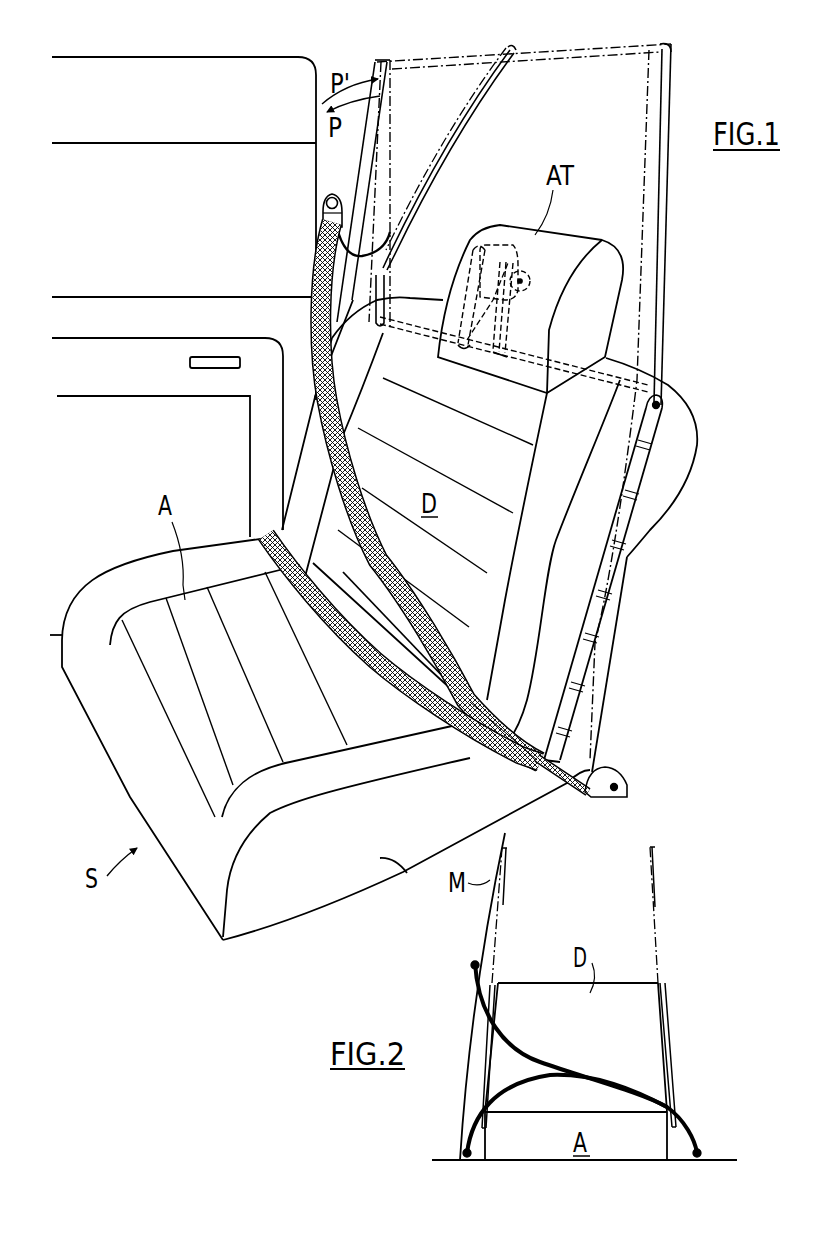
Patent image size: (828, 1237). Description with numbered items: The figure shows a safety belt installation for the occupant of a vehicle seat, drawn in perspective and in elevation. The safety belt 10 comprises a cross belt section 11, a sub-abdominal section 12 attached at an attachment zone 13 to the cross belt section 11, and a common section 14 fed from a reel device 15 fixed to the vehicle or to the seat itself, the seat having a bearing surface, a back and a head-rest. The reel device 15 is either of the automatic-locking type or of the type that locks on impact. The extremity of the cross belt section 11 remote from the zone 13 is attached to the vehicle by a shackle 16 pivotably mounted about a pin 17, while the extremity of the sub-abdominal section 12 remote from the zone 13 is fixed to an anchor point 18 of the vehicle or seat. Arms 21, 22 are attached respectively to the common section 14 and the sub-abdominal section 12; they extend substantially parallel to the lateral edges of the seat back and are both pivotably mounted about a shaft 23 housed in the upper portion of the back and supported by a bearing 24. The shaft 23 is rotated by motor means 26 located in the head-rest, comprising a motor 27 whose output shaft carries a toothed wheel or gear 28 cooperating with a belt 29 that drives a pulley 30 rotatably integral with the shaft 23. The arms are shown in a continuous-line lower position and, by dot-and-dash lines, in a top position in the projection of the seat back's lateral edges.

In FIG. 1, the safety belt 10 is at (440, 630).
In FIG. 1, the cross belt section 11 is at (342, 412).
In FIG. 2, the cross belt section 11 is at (528, 1048).
In FIG. 1, the sub-abdominal section 12 is at (363, 652).
In FIG. 2, the sub-abdominal section 12 is at (533, 1080).
In FIG. 1, the attachment zone 13 is at (480, 748).
In FIG. 1, the common section 14 is at (530, 752).
In FIG. 1, the reel device 15 is at (621, 778).
In FIG. 2, the reel device 15 is at (700, 1150).
In FIG. 1, the shackle 16 is at (321, 218).
In FIG. 1, the pin 17 is at (326, 203).
In FIG. 2, the pin 17 is at (472, 967).
In FIG. 2, the anchor point 18 is at (463, 1152).
In FIG. 1, the arm 21 is at (594, 617).
In FIG. 2, the arm 21 is at (670, 1027).
In FIG. 1, the arm 22 is at (388, 186).
In FIG. 2, the arm 22 is at (482, 1083).
In FIG. 1, the shaft 23 is at (610, 382).
In FIG. 1, the bearing 24 is at (440, 356).
In FIG. 1, the motor means 26 is at (468, 266).
In FIG. 1, the motor 27 is at (490, 262).
In FIG. 1, the toothed wheel or gear 28 is at (523, 278).
In FIG. 1, the belt 29 is at (512, 327).
In FIG. 1, the pulley 30 is at (498, 360).